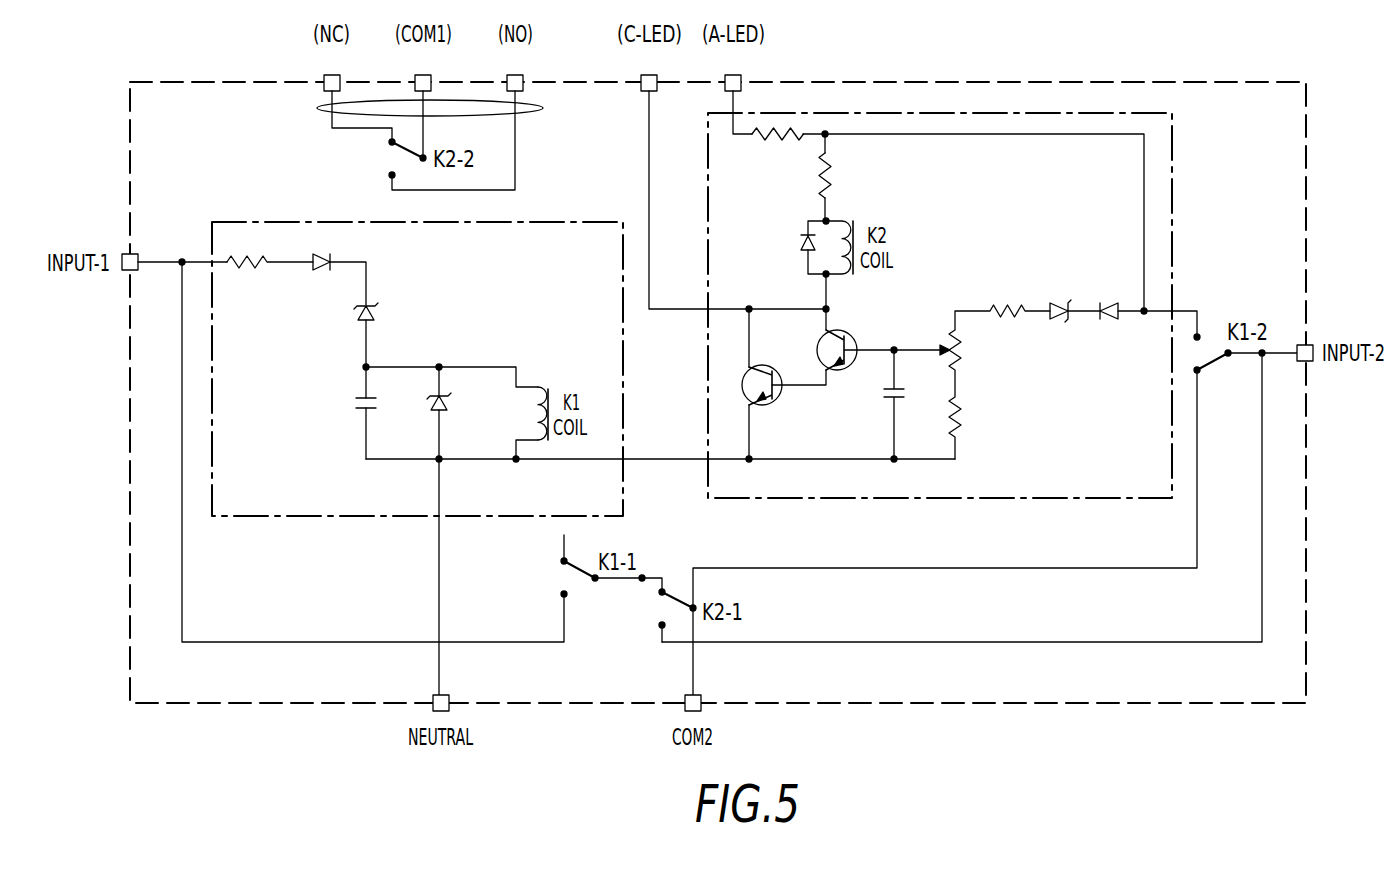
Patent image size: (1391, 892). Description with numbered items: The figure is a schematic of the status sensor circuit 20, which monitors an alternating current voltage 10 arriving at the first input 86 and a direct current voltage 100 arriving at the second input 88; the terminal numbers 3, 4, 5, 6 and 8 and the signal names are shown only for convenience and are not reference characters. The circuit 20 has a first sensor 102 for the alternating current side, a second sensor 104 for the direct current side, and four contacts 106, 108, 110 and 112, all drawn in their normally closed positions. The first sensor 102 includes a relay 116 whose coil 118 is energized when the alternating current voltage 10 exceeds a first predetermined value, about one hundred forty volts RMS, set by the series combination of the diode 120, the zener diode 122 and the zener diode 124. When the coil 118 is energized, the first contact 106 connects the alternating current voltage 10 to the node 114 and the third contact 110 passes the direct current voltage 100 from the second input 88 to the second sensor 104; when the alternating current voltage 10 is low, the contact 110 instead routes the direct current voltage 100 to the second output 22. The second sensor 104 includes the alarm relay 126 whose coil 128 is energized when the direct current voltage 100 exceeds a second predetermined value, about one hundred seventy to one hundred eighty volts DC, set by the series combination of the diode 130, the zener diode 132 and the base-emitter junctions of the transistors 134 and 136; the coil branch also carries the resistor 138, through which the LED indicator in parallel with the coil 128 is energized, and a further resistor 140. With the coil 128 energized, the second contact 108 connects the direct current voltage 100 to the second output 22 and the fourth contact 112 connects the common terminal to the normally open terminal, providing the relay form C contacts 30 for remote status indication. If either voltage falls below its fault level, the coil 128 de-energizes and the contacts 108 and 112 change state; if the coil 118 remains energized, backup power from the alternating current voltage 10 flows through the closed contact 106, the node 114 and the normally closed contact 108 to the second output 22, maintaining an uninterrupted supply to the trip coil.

The A-LED terminal 3 is at (734, 68).
The shunt trip coil 4 is at (333, 68).
The COM1 terminal 5 is at (424, 68).
The NO terminal 6 is at (516, 68).
The alternating current input 8 is at (650, 68).
The alternating current voltage 10 is at (158, 258).
The status sensor circuit 20 is at (893, 704).
The second output 22 is at (701, 695).
The relay form C contacts 30 is at (317, 108).
The first input 86 is at (125, 272).
The second input 88 is at (1310, 363).
The direct current voltage 100 is at (1283, 352).
The first sensor 102 is at (287, 518).
The second sensor 104 is at (1172, 150).
The first contact 106 is at (556, 570).
The second contact 108 is at (668, 597).
The third contact 110 is at (1210, 360).
The fourth contact 112 is at (400, 150).
The node 114 is at (642, 583).
The relay 116 is at (554, 368).
The coil 118 is at (543, 442).
The diode 120 is at (310, 272).
The zener diode 122 is at (360, 322).
The zener diode 124 is at (440, 412).
The alarm relay 126 is at (868, 216).
The coil 128 is at (855, 276).
The diode 130 is at (1112, 332).
The zener diode 132 is at (1058, 332).
The transistor 134 is at (820, 345).
The transistor 136 is at (776, 402).
The resistor 138 is at (775, 140).
The resistor 140 is at (832, 172).